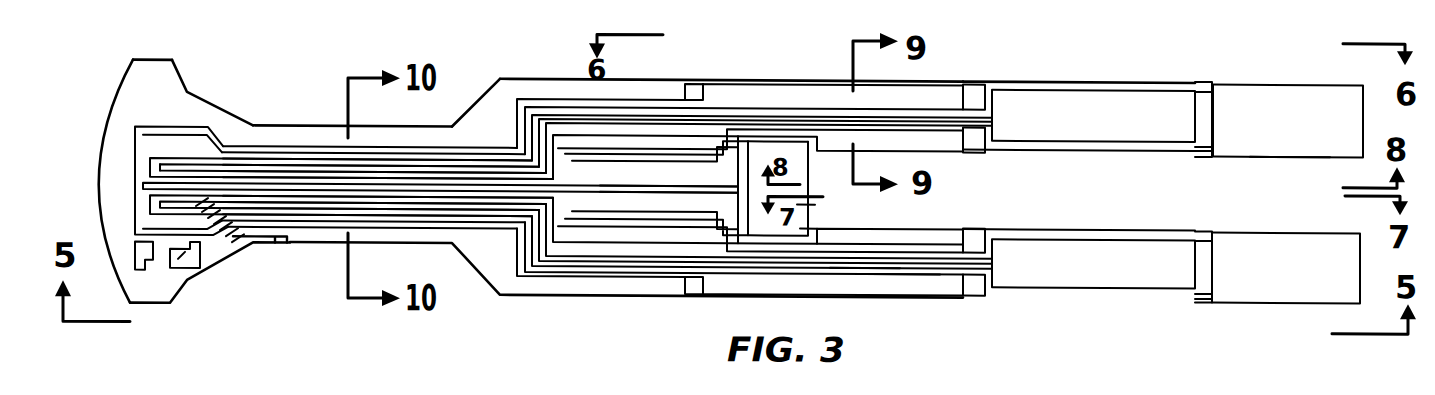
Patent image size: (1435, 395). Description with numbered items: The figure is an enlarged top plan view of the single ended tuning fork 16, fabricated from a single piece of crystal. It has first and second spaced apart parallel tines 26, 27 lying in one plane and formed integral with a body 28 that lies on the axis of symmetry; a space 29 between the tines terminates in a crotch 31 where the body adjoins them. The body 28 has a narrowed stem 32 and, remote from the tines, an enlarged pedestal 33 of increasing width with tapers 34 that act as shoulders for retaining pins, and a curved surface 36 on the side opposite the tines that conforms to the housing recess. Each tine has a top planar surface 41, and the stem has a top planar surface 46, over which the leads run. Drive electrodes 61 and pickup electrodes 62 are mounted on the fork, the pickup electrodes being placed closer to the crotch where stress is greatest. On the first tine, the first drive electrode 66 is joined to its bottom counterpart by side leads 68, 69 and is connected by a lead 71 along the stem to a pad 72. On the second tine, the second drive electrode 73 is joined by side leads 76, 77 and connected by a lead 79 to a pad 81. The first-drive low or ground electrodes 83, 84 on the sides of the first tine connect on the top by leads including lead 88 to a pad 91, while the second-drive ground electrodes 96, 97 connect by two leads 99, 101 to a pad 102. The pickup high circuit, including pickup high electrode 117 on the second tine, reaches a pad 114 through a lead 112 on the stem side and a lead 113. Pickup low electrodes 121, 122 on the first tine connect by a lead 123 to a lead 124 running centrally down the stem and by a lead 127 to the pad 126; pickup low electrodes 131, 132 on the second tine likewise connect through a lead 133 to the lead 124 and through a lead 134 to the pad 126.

The single ended tuning fork 16 is at (508, 48).
The first tine 26 is at (1325, 98).
The second tine 27 is at (1280, 252).
The body 28 is at (492, 75).
The space 29 is at (1271, 158).
The crotch 31 is at (800, 206).
The stem 32 is at (320, 125).
The pedestal 33 is at (151, 77).
The tapers 34 is at (226, 111).
The curved surface 36 is at (108, 123).
The top planar surface 41 is at (893, 289).
The top planar surface 46 is at (424, 241).
The drive electrodes 61 is at (1085, 60).
The pickup electrodes 62 is at (786, 54).
The drive electrode No. 1 66 is at (1172, 132).
The lead 68 is at (1204, 92).
The lead 69 is at (1196, 156).
The lead 71 is at (573, 150).
The pad 72 is at (190, 158).
The drive electrode No. 2 73 is at (1122, 282).
The lead 76 is at (1199, 237).
The lead 77 is at (1200, 305).
The lead 79 is at (605, 227).
The pad 81 is at (194, 210).
The drive No. 1 low or ground electrode 83 is at (973, 153).
The drive No. 1 low or ground electrode 84 is at (973, 91).
The lead 88 is at (863, 111).
The pad 91 is at (156, 166).
The drive No. 2 low or ground electrode 96 is at (973, 234).
The drive No. 2 low or ground electrode 97 is at (970, 293).
The lead 99 is at (847, 272).
The lead 101 is at (890, 255).
The pad 102 is at (158, 207).
The lead 112 is at (284, 246).
The lead 113 is at (199, 253).
The pad 114 is at (180, 288).
The pickup high electrode 117 is at (926, 392).
The pickup low electrode 121 is at (798, 153).
The pickup low electrode 122 is at (697, 90).
The lead 123 is at (775, 140).
The lead 124 is at (626, 191).
The pad 126 is at (146, 261).
The lead 127 is at (552, 92).
The pickup low electrode 131 is at (808, 228).
The pickup low electrode 132 is at (696, 296).
The lead 133 is at (775, 246).
The lead 134 is at (562, 265).